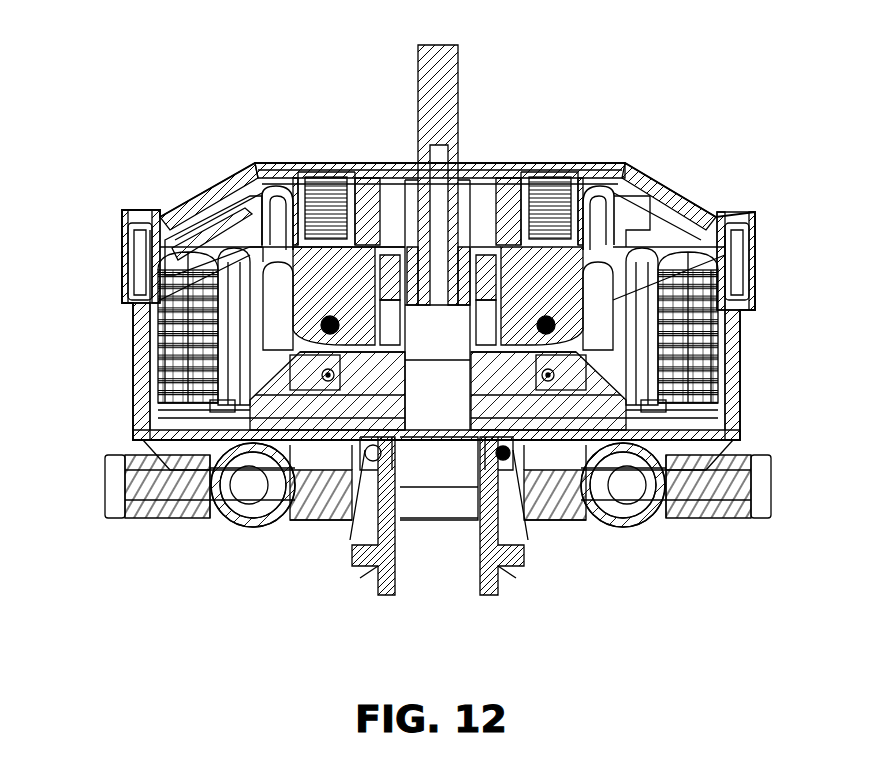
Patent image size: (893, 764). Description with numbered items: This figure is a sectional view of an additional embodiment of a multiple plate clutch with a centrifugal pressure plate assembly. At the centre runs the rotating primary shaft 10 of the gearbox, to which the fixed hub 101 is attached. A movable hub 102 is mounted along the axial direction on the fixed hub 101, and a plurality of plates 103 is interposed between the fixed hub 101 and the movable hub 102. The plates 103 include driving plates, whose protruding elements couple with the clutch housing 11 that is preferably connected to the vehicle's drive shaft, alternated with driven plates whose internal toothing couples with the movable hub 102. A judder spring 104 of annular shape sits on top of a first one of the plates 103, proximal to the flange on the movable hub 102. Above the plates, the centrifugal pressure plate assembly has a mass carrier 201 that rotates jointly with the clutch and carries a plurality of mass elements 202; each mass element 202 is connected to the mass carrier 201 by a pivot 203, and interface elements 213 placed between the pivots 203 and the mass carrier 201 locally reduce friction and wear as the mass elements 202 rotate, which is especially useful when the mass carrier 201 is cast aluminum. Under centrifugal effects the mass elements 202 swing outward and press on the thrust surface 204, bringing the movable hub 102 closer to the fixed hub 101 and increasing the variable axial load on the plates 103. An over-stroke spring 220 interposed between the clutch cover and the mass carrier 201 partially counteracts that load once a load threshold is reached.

The over-stroke spring 220 is at (514, 218).
The mass carrier 201 is at (353, 215).
The mass elements 202 is at (311, 286).
The interface elements 213 is at (262, 232).
The pivot 203 is at (276, 243).
The judder spring 104 is at (176, 266).
The plates 103 is at (178, 344).
The movable hub 102 is at (637, 307).
The clutch housing 11 is at (727, 440).
The thrust surface 204 is at (320, 350).
The shaft 10 is at (428, 414).
The fixed hub 101 is at (555, 418).